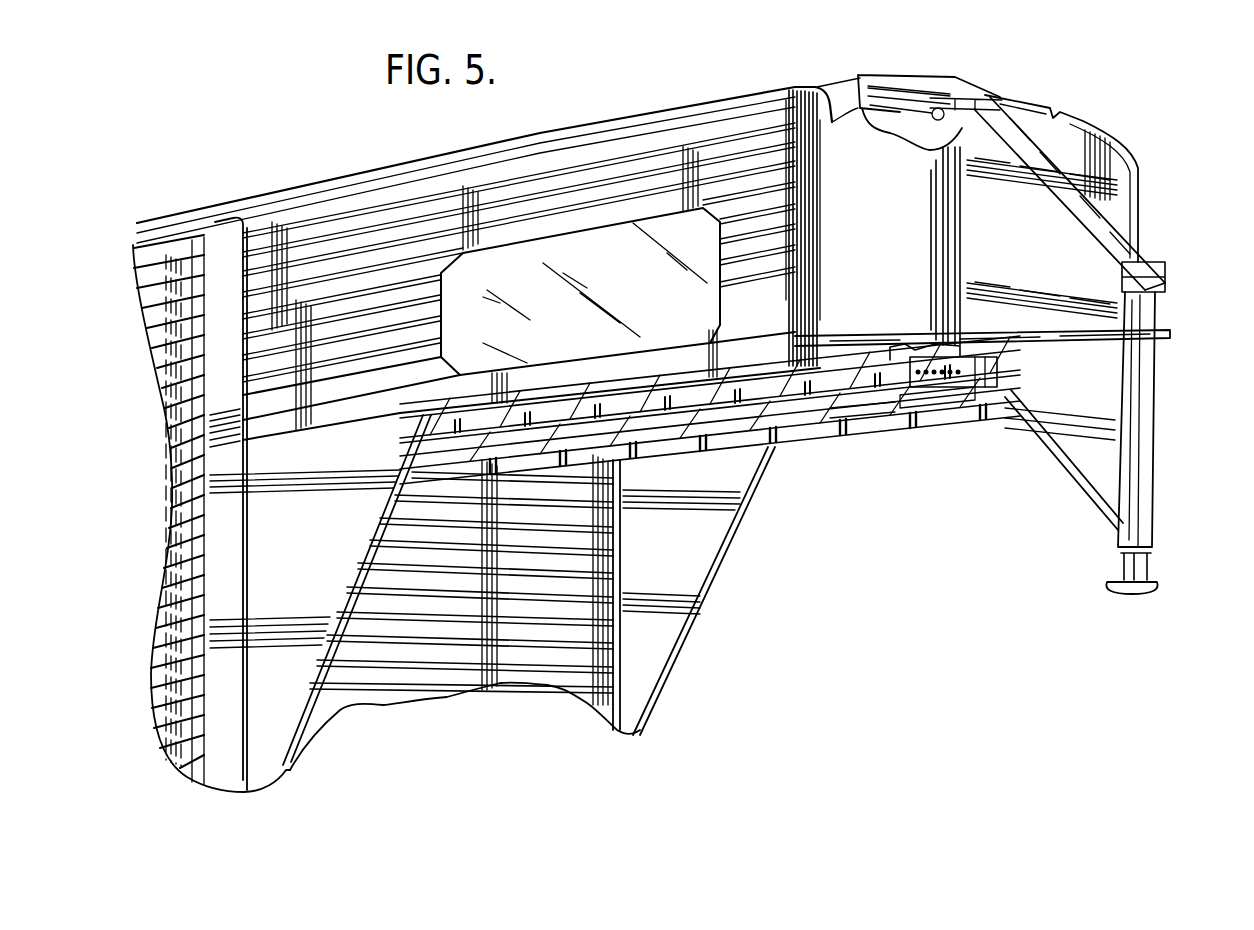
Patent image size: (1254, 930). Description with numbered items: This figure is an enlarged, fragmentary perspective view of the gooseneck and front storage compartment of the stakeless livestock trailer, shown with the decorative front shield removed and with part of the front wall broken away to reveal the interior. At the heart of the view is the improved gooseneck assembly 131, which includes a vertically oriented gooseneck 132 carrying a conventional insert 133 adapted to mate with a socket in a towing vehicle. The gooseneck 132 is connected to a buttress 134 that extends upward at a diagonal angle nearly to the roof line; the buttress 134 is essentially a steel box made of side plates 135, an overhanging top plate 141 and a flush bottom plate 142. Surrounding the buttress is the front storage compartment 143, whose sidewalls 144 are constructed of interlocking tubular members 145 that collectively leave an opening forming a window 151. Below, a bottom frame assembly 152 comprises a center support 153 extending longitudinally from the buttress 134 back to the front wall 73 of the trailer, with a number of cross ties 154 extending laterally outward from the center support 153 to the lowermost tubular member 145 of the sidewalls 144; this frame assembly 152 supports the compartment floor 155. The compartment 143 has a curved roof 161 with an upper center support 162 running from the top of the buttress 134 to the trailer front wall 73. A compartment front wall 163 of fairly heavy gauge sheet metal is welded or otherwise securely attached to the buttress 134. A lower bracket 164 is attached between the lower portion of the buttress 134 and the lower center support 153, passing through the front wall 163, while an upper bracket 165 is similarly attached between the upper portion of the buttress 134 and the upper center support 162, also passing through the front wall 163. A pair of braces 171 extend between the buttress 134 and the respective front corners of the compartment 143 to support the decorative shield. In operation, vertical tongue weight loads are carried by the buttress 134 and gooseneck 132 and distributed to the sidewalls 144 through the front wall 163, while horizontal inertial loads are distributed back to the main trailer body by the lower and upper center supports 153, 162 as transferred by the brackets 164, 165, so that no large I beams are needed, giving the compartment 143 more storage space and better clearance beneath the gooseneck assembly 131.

The front wall 73 is at (513, 675).
The gooseneck assembly 131 is at (1148, 201).
The gooseneck 132 is at (1156, 460).
The insert 133 is at (1152, 568).
The buttress 134 is at (1170, 289).
The side plates 135 is at (1040, 250).
The overhanging top plate 141 is at (1090, 145).
The flush bottom plate 142 is at (1058, 458).
The front storage compartment 143 is at (618, 120).
The sidewalls 144 is at (330, 207).
The interlocking tubular members 145 is at (370, 383).
The window 151 is at (645, 292).
The bottom frame assembly 152 is at (806, 455).
The center support 153 is at (718, 400).
The cross ties 154 is at (965, 405).
The compartment floor 155 is at (843, 408).
The curved roof 161 is at (797, 88).
The upper center support 162 is at (912, 78).
The compartment front wall 163 is at (838, 132).
The lower bracket 164 is at (1000, 373).
The upper bracket 165 is at (975, 97).
The braces 171 is at (905, 318).